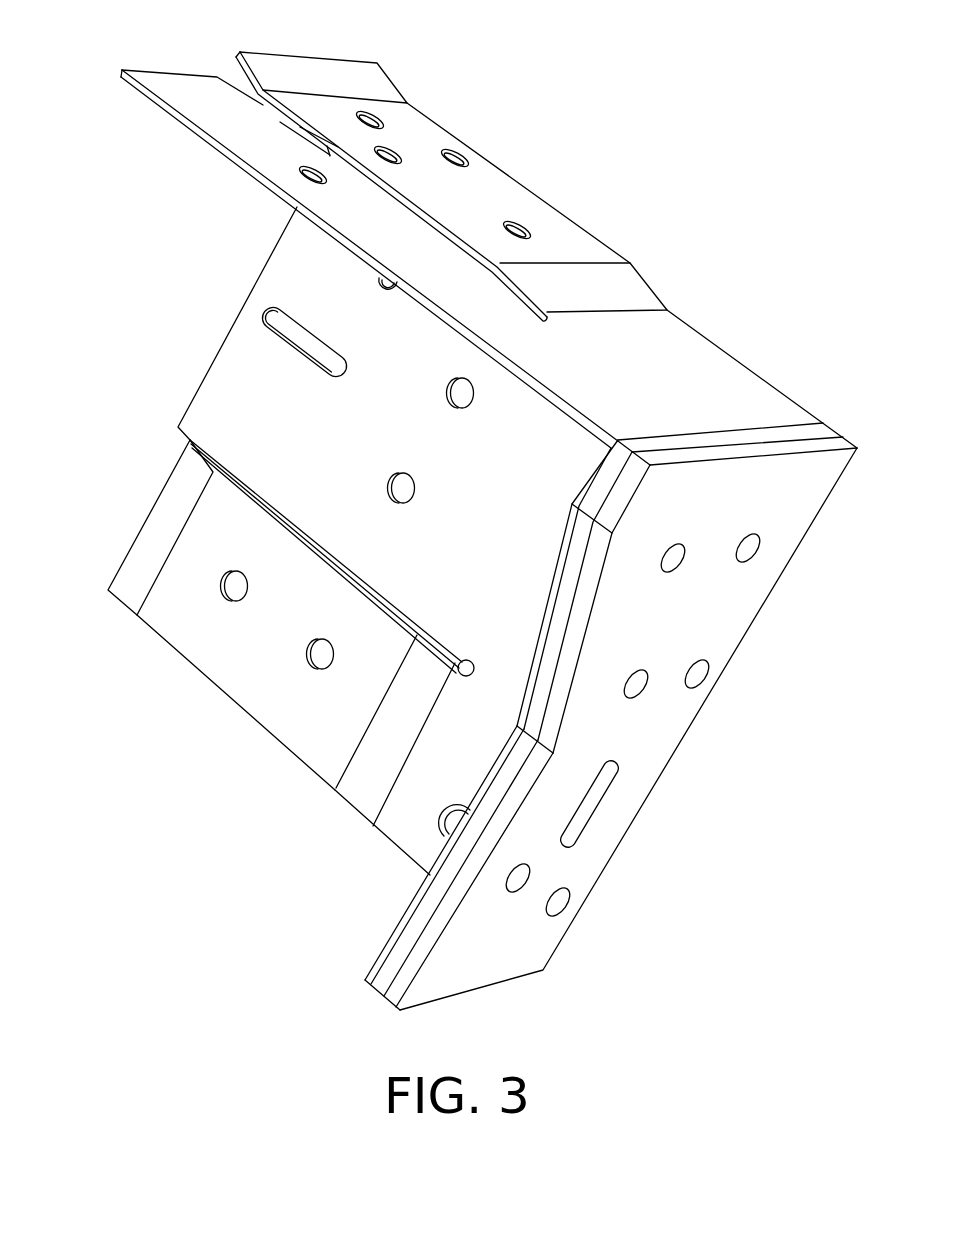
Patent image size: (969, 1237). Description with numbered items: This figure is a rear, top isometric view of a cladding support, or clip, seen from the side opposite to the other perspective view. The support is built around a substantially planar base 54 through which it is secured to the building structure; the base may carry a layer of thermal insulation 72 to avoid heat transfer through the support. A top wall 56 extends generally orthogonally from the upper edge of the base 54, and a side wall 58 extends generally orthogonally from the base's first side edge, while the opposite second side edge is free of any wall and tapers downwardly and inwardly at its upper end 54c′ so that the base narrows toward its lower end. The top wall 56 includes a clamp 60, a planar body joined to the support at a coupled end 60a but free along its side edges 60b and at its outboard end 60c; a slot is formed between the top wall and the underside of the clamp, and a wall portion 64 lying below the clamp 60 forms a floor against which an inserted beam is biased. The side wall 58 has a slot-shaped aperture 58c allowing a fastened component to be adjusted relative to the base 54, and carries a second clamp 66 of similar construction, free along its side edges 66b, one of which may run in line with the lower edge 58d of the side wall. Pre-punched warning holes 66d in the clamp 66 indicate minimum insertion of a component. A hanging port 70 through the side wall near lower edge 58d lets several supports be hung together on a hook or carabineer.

The base 54 is at (608, 733).
The upper end of second side edge 54c′ is at (555, 563).
The top wall 56 is at (715, 378).
The side wall 58 is at (252, 387).
The slot-shaped aperture 58c is at (287, 323).
The lower edge of side wall 58d is at (373, 828).
The clamp 60 is at (568, 240).
The coupled end 60a is at (627, 292).
The side edges of clamp 60b is at (450, 221).
The outboard end 60c is at (362, 61).
The wall portion 64 is at (263, 105).
The clamp 66 is at (257, 650).
The side edges of clamp 66b is at (267, 730).
The pre-punched holes 66d is at (237, 585).
The hanging port 70 is at (437, 843).
The layer of thermal insulation 72 is at (387, 983).